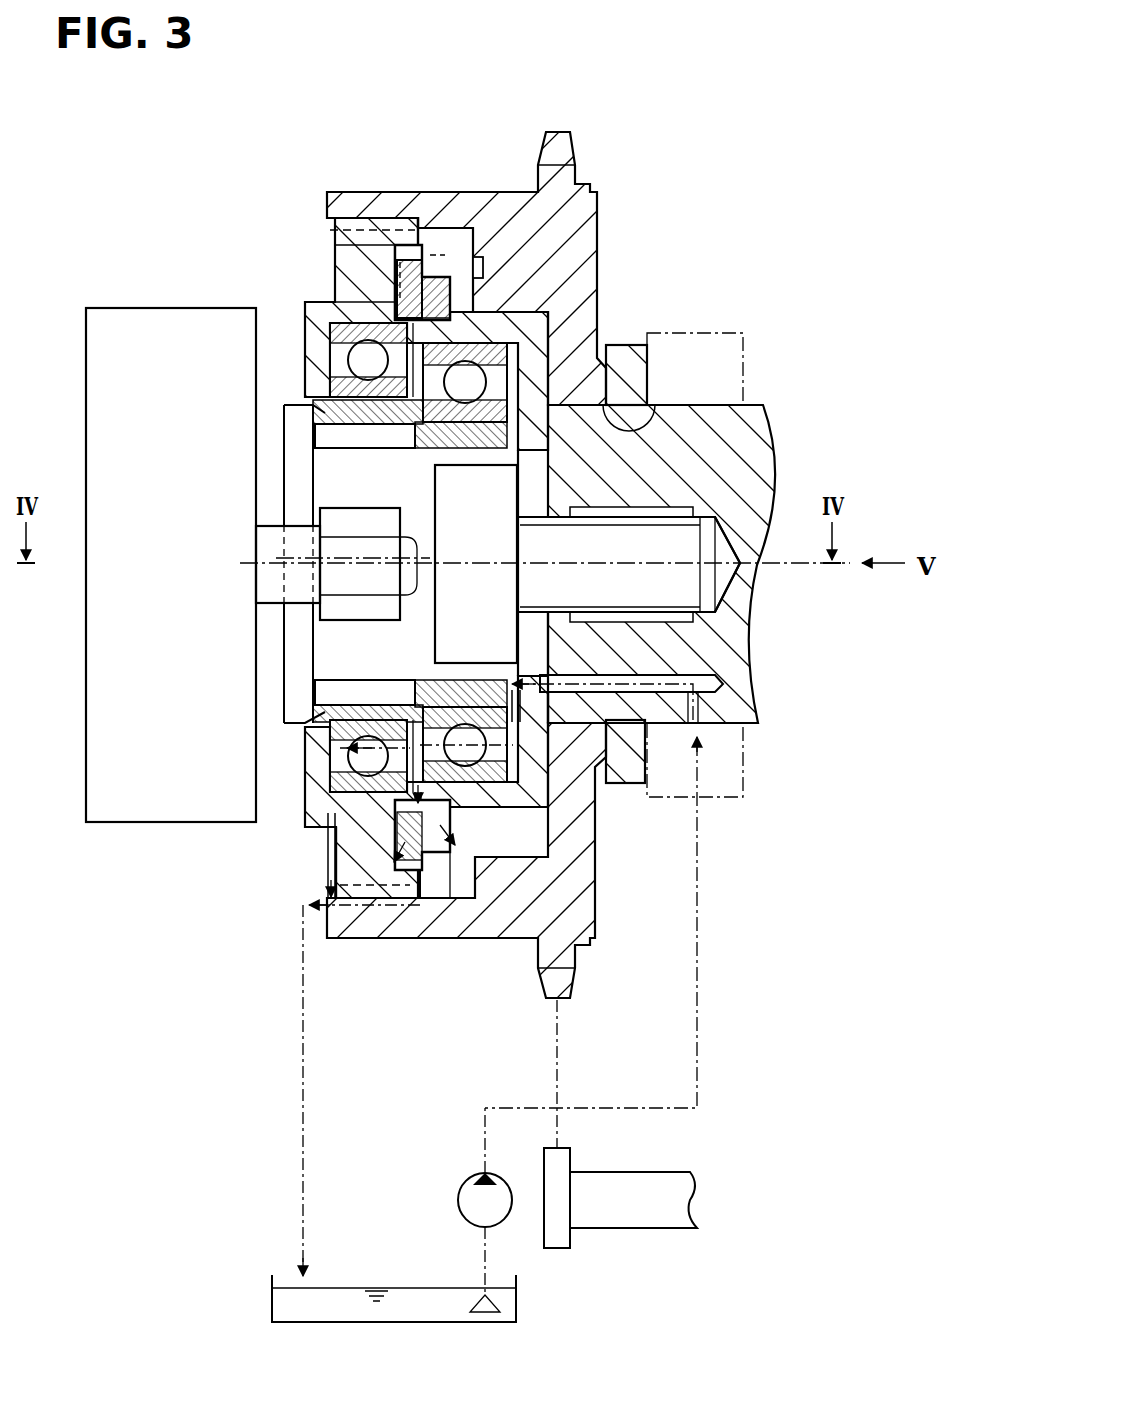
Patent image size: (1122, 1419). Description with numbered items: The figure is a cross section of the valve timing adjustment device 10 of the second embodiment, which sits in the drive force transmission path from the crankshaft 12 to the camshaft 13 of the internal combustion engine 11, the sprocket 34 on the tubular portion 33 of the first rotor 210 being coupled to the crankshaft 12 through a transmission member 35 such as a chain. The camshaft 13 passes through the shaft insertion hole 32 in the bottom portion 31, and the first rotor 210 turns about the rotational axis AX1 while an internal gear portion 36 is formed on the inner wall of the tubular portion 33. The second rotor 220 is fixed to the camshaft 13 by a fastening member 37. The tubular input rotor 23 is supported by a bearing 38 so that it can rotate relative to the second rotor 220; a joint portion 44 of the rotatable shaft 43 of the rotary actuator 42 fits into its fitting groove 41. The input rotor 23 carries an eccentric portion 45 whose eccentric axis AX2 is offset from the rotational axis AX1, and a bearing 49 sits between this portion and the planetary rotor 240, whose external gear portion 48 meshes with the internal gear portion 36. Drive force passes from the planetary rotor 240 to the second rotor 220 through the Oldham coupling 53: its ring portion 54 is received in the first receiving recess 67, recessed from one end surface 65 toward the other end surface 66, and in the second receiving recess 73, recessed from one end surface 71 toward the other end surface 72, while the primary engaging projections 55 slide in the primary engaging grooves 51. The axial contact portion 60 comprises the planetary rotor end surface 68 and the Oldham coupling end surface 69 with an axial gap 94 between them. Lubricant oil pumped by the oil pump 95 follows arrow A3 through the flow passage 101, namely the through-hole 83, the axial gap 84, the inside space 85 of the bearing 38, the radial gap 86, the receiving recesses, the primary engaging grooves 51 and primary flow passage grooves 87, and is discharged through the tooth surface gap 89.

The valve timing adjustment device 10 is at (290, 176).
The internal combustion engine 11 is at (745, 312).
The crankshaft 12 is at (685, 1175).
The camshaft 13 is at (758, 425).
The input rotor 23 is at (313, 777).
The bottom portion 31 is at (578, 283).
The shaft insertion hole 32 is at (630, 433).
The tubular portion 33 is at (343, 940).
The sprocket 34 is at (557, 140).
The transmission member 35 is at (557, 1070).
The internal gear portion 36 is at (347, 223).
The fastening member 37 is at (673, 582).
The bearing 38 is at (700, 793).
The fitting groove 41 is at (400, 547).
The rotary actuator 42 is at (118, 306).
The rotatable shaft 43 is at (270, 598).
The joint portion 44 is at (340, 645).
The eccentric portion 45 is at (333, 360).
The external gear portion 48 is at (348, 213).
The bearing 49 is at (347, 763).
The primary engaging grooves 51 is at (428, 222).
The Oldham coupling 53 is at (395, 912).
The ring portion 54 is at (393, 305).
The primary engaging projections 55 is at (400, 222).
The axial contact portion 60 is at (420, 168).
The one end surface 65 is at (445, 915).
The other end surface 66 is at (333, 800).
The first receiving recess 67 is at (333, 832).
The planetary rotor end surface 68 is at (458, 220).
The Oldham coupling end surface 69 is at (365, 220).
The one end surface 71 is at (415, 945).
The other end surface 72 is at (548, 805).
The second receiving recess 73 is at (573, 943).
The through-hole 83 is at (533, 645).
The axial gap 84 is at (530, 703).
The inside space 85 is at (543, 867).
The radial gap 86 is at (400, 850).
The primary flow passage grooves 87 is at (458, 905).
The tooth surface gap 89 is at (330, 940).
The axial gap 94 is at (315, 905).
The oil pump 95 is at (458, 1200).
The flow passage 101 is at (530, 737).
The first rotor 210 is at (587, 182).
The second rotor 220 is at (486, 268).
The planetary rotor 240 is at (357, 262).
The arrow A3 is at (700, 958).
The rotational axis AX1 is at (270, 565).
The eccentric axis AX2 is at (292, 558).